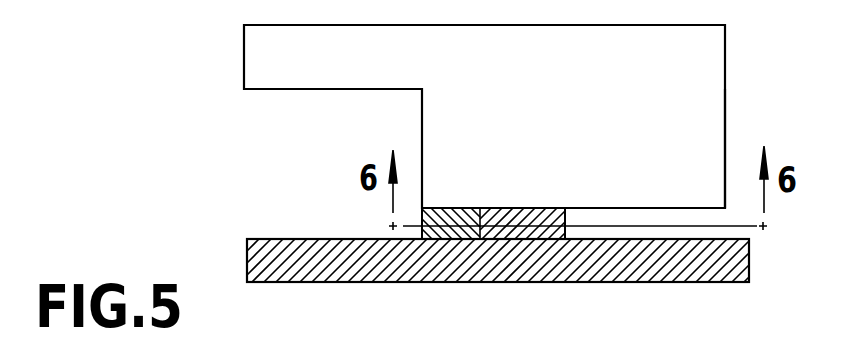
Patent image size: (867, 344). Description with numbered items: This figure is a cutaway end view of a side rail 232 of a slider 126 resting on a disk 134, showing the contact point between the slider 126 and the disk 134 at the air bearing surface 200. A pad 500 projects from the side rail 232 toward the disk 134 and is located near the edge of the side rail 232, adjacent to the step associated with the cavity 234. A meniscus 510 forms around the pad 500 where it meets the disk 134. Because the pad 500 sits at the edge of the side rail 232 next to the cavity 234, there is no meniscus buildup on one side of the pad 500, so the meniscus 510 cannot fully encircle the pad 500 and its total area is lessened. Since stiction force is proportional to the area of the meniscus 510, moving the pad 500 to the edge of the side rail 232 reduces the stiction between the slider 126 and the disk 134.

The slider 126 is at (705, 92).
The cavity 234 is at (328, 89).
The air bearing surface 200 is at (373, 89).
The side rail 232 is at (707, 168).
The meniscus 510 is at (535, 209).
The disk 134 is at (300, 268).
The pad 500 is at (443, 225).